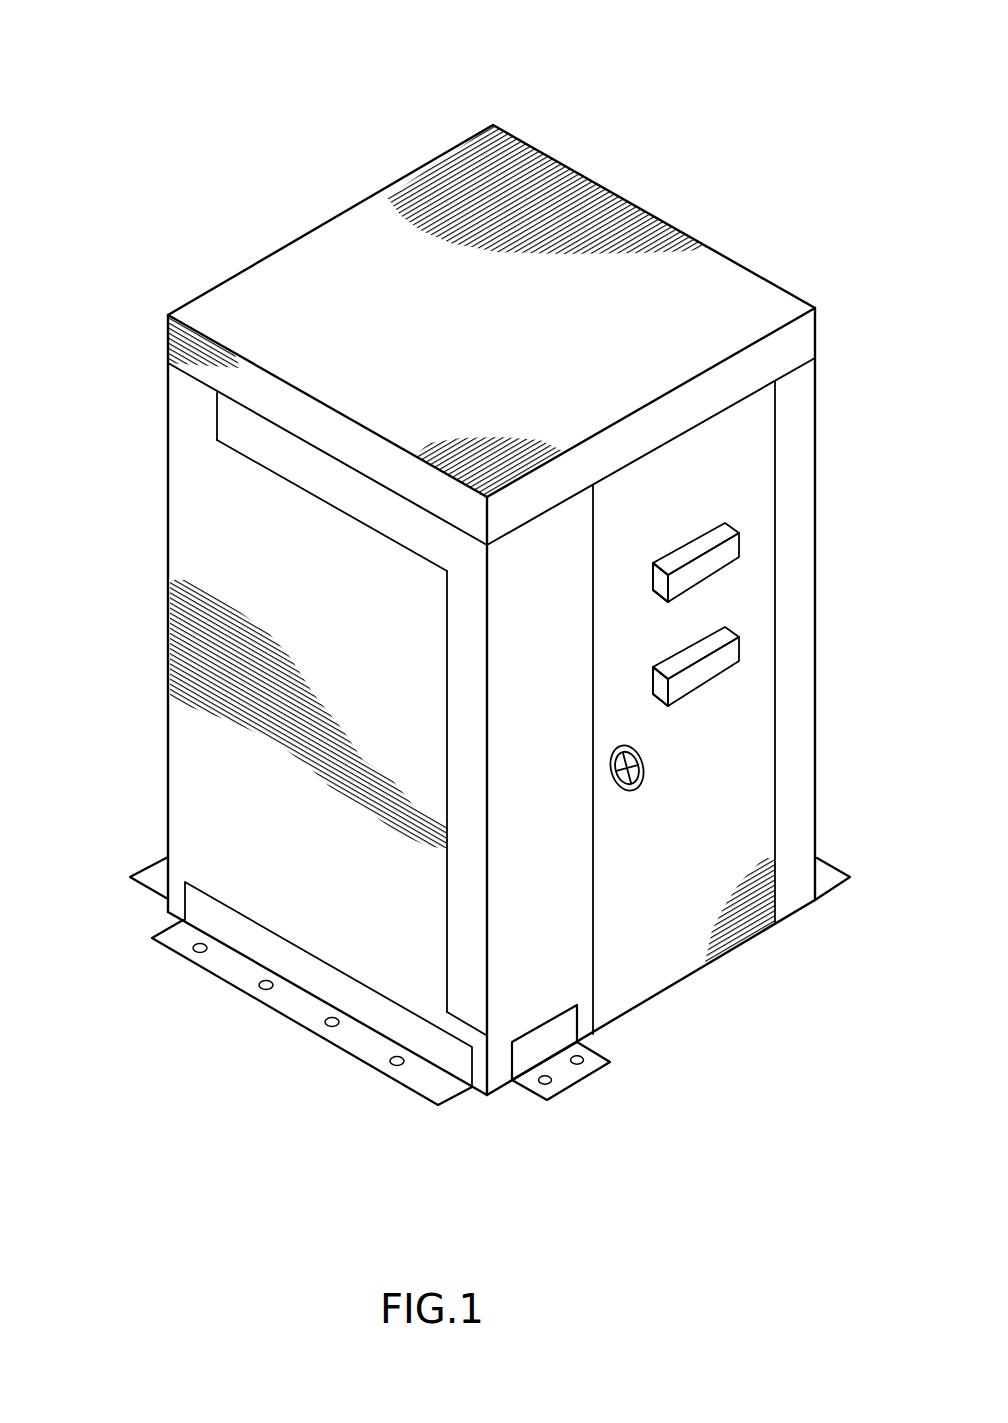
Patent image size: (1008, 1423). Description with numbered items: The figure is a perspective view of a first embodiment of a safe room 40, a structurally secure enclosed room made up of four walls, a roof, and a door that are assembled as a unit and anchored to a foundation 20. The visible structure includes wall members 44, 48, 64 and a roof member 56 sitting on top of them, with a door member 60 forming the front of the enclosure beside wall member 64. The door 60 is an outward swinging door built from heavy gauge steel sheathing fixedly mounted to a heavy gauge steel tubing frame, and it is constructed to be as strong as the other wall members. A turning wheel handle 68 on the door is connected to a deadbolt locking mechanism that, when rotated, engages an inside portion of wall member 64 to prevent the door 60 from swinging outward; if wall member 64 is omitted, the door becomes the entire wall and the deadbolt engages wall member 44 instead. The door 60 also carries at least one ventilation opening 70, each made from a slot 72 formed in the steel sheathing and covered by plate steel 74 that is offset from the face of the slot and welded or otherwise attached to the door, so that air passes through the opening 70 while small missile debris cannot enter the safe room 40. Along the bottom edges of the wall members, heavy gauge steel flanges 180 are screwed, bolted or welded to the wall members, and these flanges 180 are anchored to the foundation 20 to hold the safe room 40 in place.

The foundation 20 is at (300, 1095).
The safe room 40 is at (336, 160).
The wall member 44 is at (222, 783).
The wall member 48 is at (217, 283).
The roof member 56 is at (635, 302).
The door member 60 is at (703, 907).
The wall member 64 is at (507, 972).
The turning wheel handle 68 is at (631, 790).
The ventilation opening 70 is at (658, 598).
The slot 72 is at (652, 573).
The plate steel 74 is at (732, 550).
The flanges 180 is at (248, 967).